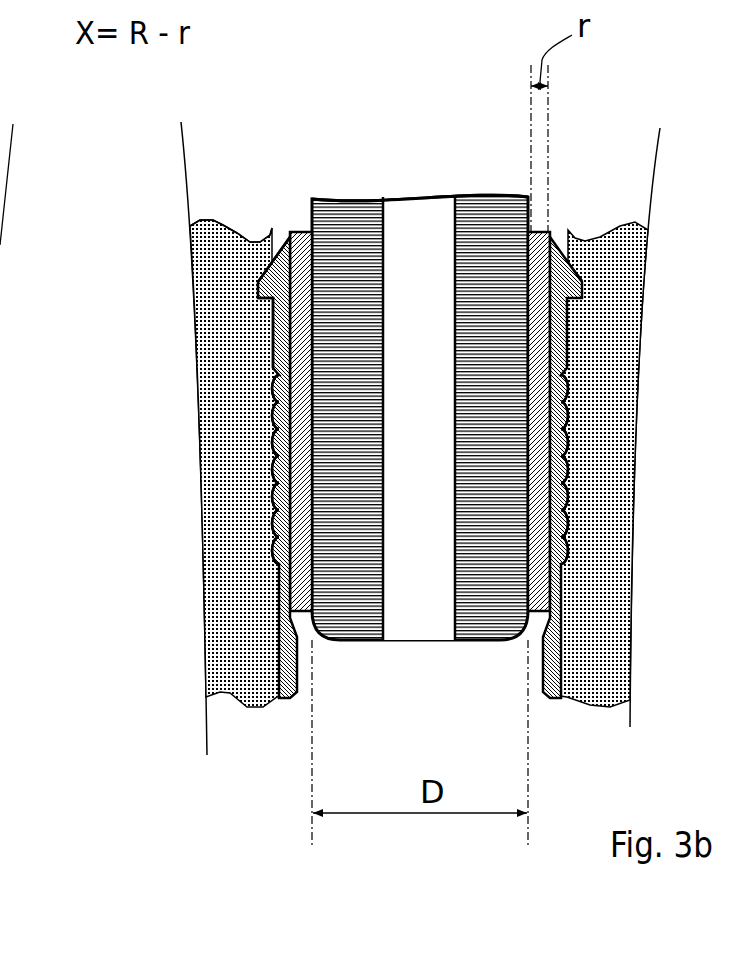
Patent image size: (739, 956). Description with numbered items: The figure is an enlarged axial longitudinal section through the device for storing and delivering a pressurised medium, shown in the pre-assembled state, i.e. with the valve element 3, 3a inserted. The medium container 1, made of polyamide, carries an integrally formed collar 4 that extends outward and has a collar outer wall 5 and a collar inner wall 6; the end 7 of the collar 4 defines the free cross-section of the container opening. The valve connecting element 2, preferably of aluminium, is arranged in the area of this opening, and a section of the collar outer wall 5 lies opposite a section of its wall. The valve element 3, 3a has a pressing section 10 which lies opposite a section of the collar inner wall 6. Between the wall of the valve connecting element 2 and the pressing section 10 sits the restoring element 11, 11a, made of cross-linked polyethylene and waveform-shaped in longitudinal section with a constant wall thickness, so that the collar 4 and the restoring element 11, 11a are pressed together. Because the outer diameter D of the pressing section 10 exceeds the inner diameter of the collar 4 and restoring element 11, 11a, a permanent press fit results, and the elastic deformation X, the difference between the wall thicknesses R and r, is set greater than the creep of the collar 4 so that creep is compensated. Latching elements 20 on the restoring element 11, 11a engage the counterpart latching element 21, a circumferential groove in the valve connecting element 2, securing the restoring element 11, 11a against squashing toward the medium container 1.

The medium container 1 is at (547, 700).
The valve connecting element 2 is at (223, 463).
The valve element 3 is at (396, 334).
The valve element 3a is at (347, 233).
The pressing section 10 is at (396, 349).
The collar 4 is at (296, 527).
The collar outer wall 5 is at (0, 605).
The collar inner wall 6 is at (0, 667).
The end of the collar 7 is at (248, 315).
The restoring element 11 is at (284, 482).
The restoring element 11a is at (0, 555).
The latching element 20 is at (195, 225).
The counterpart latching element 21 is at (243, 280).